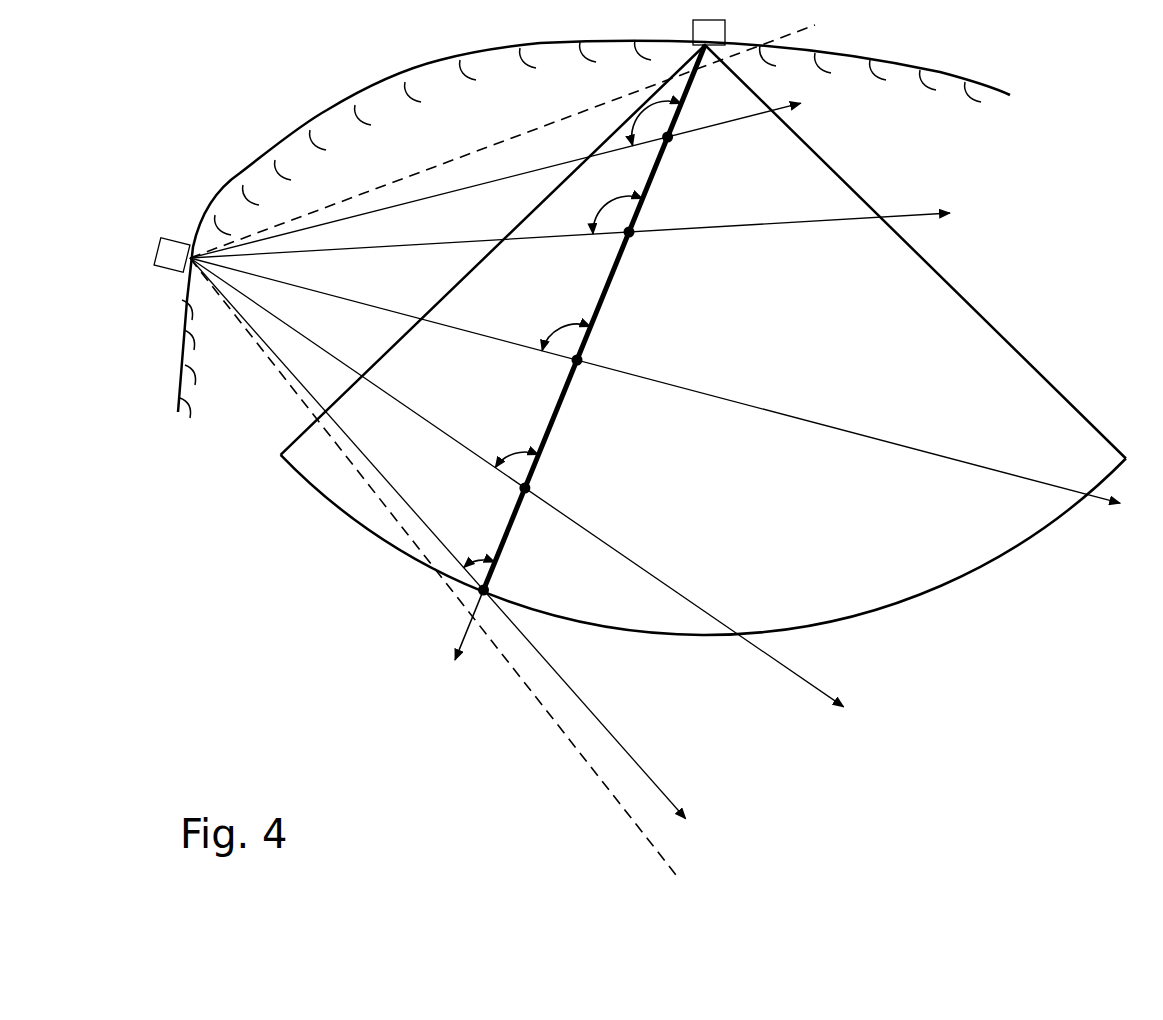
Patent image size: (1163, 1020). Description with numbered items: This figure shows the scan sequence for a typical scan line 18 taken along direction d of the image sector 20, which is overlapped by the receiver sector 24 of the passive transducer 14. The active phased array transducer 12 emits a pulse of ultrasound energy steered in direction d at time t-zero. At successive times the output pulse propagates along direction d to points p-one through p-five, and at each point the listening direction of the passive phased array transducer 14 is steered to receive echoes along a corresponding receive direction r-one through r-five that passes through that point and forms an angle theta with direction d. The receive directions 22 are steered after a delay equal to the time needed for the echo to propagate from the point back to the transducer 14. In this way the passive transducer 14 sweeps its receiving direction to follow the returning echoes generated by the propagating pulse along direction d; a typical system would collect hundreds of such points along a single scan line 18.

The active phased array transducer 12 is at (692, 33).
The passive phased array transducer 14 is at (172, 240).
The scan line 18 is at (597, 307).
The image sector 20 is at (970, 304).
The receive rays 22 is at (467, 186).
The receiver sector 24 is at (402, 180).